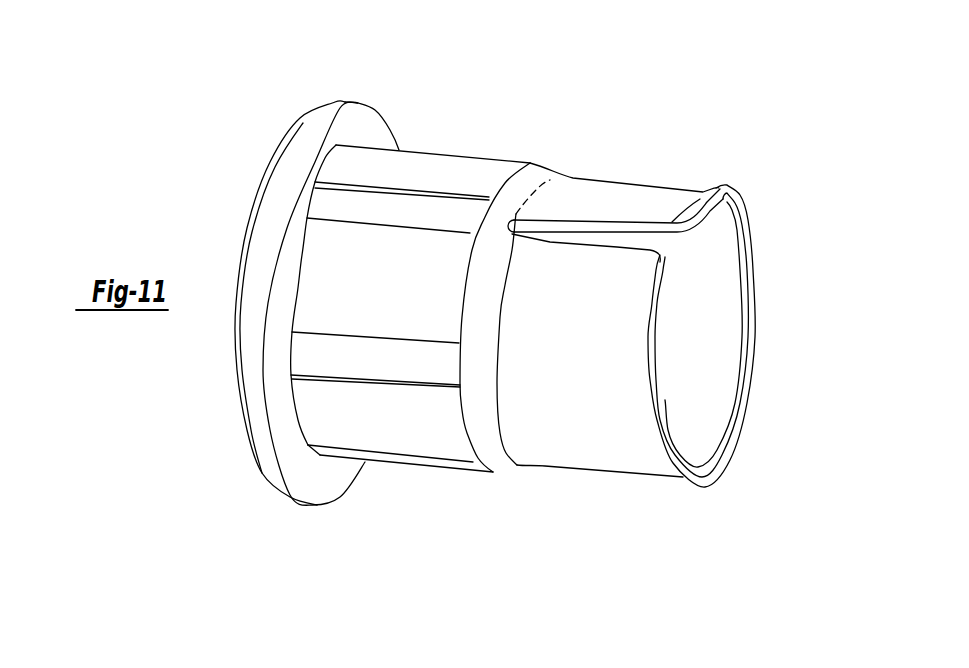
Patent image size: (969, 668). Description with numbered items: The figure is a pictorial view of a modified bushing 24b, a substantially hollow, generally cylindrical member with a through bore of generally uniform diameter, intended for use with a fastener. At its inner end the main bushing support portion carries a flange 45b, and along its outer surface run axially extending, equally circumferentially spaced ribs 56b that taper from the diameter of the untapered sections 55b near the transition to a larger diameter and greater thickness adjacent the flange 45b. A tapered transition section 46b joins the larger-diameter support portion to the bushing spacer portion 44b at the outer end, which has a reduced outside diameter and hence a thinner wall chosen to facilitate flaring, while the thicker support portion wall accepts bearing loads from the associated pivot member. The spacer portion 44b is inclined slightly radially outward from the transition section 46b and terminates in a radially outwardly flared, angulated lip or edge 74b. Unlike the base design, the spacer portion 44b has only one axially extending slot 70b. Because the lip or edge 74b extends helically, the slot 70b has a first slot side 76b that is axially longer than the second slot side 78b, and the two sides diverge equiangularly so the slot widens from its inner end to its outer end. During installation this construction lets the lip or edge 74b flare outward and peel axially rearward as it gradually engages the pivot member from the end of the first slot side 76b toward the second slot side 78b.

The bushing 24b is at (476, 100).
The flange 45b is at (290, 140).
The tapered transition section 46b is at (505, 457).
The ribs 56b is at (400, 181).
The untapered sections 55b is at (429, 223).
The bushing spacer portion 44b is at (716, 184).
The first slot side 76b is at (588, 222).
The second slot side 78b is at (607, 247).
The axially extending slot 70b is at (628, 237).
The flared lip or edge 74b is at (734, 194).